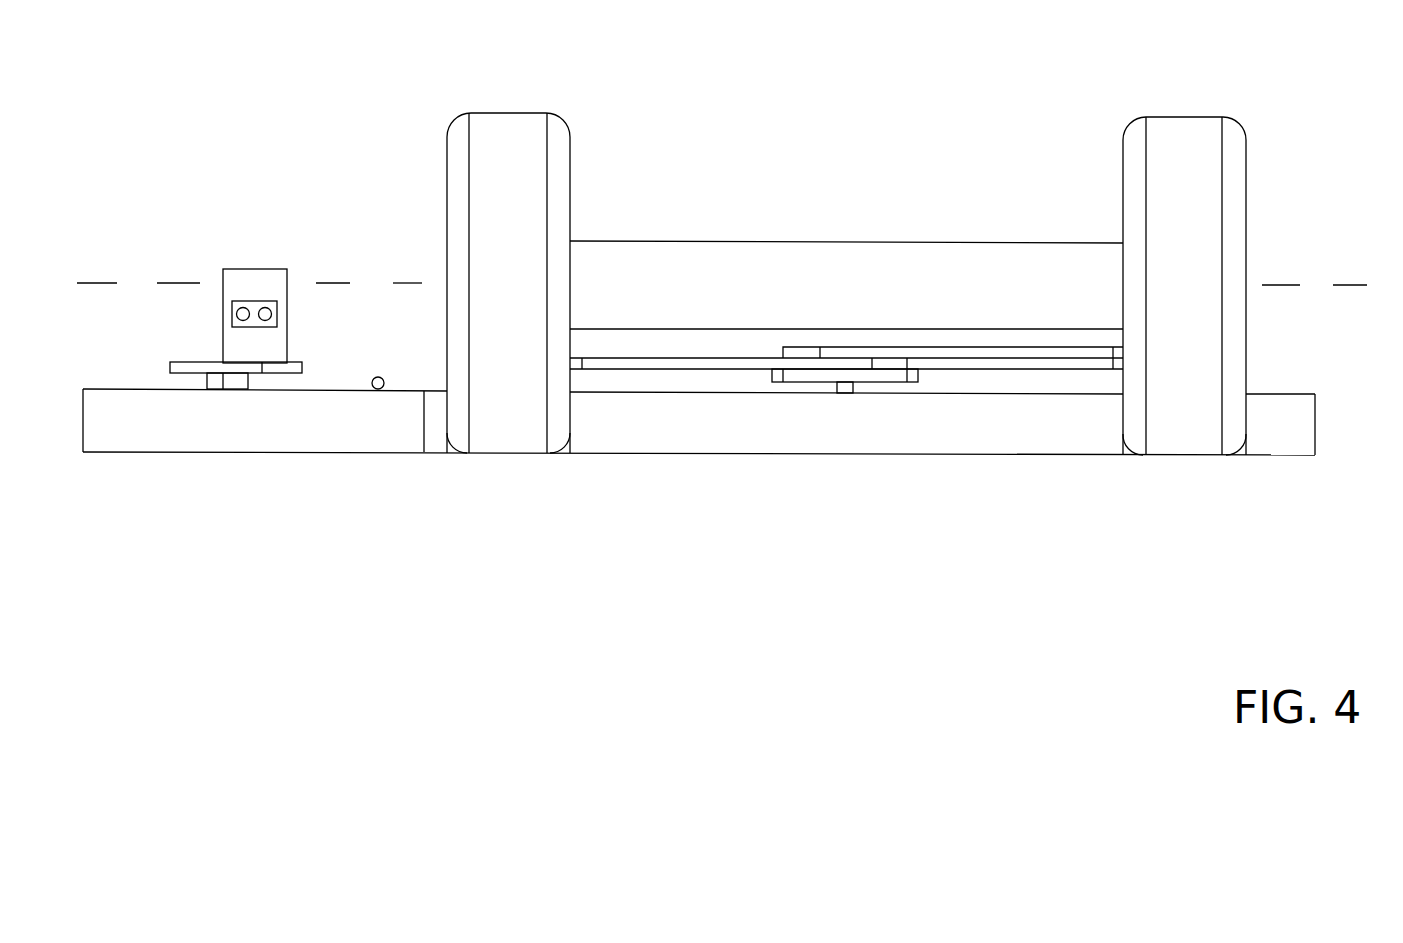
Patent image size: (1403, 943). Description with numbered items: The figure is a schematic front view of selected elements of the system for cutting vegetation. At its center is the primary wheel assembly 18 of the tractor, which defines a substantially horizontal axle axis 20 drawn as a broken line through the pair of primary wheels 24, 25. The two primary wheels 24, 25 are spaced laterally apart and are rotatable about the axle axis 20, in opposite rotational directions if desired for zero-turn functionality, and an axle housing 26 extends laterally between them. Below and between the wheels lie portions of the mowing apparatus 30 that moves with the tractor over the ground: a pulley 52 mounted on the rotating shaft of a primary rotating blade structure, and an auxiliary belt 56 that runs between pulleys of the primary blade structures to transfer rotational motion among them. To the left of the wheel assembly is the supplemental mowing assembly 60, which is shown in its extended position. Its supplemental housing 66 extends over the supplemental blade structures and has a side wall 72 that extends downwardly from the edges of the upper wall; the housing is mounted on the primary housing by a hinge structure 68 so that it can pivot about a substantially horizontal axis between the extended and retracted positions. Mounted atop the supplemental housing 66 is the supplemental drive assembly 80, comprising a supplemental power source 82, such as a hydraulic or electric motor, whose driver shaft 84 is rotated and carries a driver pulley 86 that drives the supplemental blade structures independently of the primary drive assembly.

The primary wheel assembly 18 is at (890, 236).
The axle axis 20 is at (1352, 285).
The primary wheel 24 is at (1232, 237).
The primary wheel 25 is at (535, 182).
The axle housing 26 is at (913, 242).
The mowing apparatus 30 is at (692, 485).
The pulley 52 is at (880, 383).
The auxiliary belt 56 is at (673, 371).
The supplemental mowing assembly 60 is at (692, 470).
The supplemental housing 66 is at (336, 466).
The hinge structure 68 is at (385, 380).
The side wall 72 is at (265, 428).
The supplemental drive assembly 80 is at (292, 285).
The supplemental power source 82 is at (318, 297).
The driver shaft 84 is at (260, 382).
The driver pulley 86 is at (272, 269).